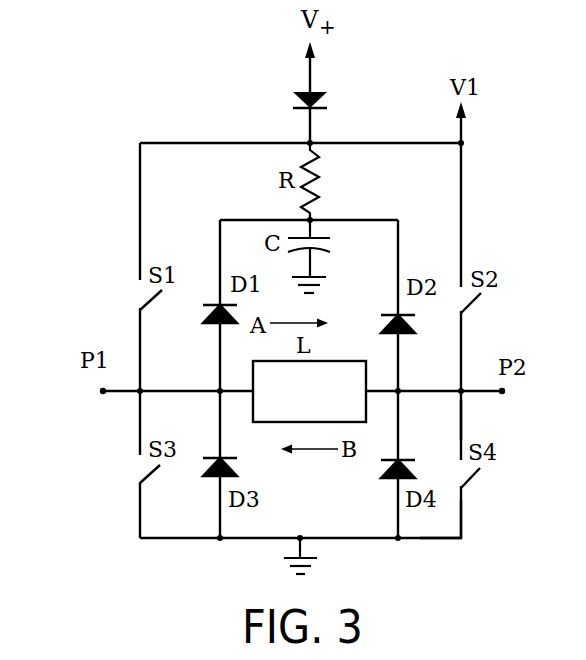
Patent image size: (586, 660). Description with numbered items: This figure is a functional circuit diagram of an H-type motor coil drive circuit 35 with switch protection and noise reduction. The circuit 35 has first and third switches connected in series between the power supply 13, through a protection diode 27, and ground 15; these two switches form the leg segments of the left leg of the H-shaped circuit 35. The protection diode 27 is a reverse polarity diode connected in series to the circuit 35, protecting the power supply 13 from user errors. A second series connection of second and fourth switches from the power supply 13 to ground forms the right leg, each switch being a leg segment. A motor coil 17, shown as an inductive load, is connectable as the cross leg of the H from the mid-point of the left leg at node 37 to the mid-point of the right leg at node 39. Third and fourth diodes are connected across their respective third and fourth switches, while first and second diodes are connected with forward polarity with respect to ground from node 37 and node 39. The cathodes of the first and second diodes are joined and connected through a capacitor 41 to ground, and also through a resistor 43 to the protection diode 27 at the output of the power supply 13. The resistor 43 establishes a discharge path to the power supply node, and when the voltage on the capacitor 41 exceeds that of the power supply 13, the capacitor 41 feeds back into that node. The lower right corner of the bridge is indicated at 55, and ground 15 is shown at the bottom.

The power supply 13 is at (336, 32).
The protection diode 27 is at (328, 96).
The resistor 43 is at (278, 178).
The capacitor 41 is at (332, 240).
The motor coil 17 is at (333, 360).
The node 37 is at (100, 388).
The node 39 is at (510, 397).
The ground 15 is at (310, 563).
The H-bridge switching circuit 55 is at (480, 531).
The circuit 35 is at (516, 440).